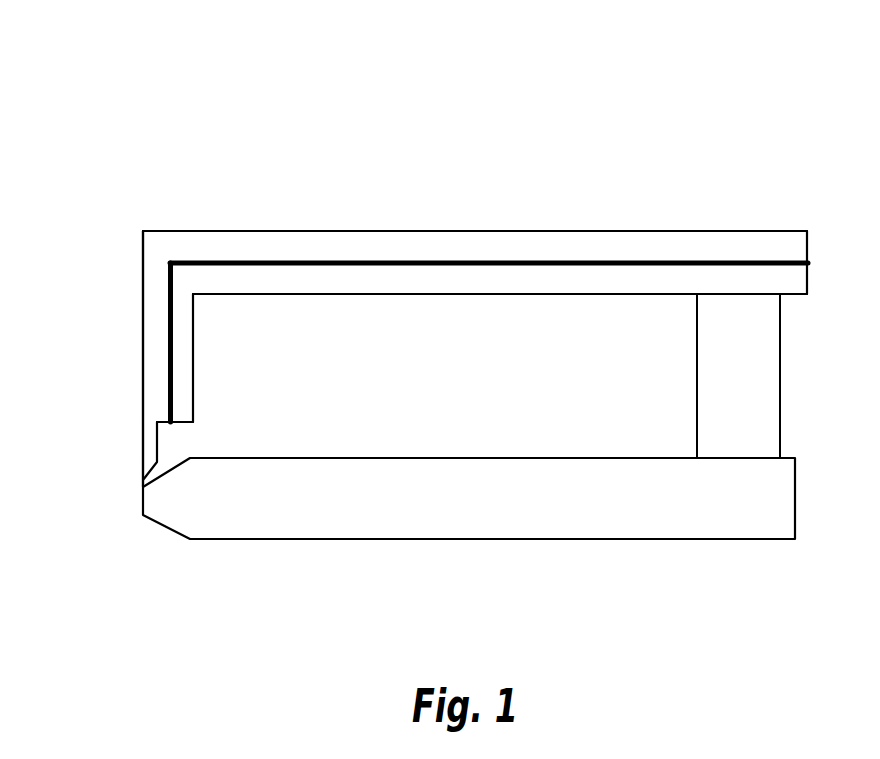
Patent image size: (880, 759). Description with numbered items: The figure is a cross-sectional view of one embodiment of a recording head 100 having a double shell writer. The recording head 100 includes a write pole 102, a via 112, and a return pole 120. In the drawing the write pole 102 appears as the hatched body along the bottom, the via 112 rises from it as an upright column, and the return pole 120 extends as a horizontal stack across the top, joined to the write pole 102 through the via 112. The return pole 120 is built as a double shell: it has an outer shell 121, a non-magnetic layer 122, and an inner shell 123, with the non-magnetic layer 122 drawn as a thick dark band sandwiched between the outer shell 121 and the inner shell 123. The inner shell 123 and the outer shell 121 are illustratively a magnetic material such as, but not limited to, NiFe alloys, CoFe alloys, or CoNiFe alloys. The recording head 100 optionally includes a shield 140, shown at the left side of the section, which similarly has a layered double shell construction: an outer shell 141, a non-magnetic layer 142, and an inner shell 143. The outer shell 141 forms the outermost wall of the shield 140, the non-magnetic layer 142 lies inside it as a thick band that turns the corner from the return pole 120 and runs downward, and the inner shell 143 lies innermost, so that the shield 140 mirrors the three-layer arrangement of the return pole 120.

The recording head 100 is at (690, 124).
The write pole 102 is at (782, 508).
The via 112 is at (770, 392).
The return pole 120 is at (350, 226).
The outer shell 121 is at (462, 243).
The non-magnetic layer 122 is at (513, 262).
The inner shell 123 is at (545, 280).
The shield 140 is at (134, 369).
The outer shell 141 is at (152, 313).
The non-magnetic layer 142 is at (170, 288).
The inner shell 143 is at (182, 310).